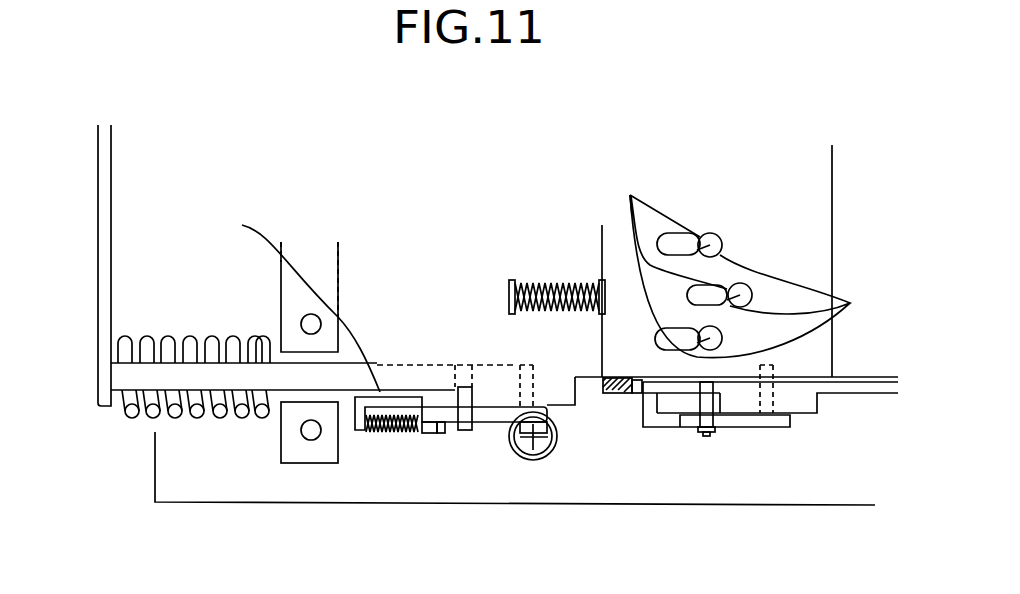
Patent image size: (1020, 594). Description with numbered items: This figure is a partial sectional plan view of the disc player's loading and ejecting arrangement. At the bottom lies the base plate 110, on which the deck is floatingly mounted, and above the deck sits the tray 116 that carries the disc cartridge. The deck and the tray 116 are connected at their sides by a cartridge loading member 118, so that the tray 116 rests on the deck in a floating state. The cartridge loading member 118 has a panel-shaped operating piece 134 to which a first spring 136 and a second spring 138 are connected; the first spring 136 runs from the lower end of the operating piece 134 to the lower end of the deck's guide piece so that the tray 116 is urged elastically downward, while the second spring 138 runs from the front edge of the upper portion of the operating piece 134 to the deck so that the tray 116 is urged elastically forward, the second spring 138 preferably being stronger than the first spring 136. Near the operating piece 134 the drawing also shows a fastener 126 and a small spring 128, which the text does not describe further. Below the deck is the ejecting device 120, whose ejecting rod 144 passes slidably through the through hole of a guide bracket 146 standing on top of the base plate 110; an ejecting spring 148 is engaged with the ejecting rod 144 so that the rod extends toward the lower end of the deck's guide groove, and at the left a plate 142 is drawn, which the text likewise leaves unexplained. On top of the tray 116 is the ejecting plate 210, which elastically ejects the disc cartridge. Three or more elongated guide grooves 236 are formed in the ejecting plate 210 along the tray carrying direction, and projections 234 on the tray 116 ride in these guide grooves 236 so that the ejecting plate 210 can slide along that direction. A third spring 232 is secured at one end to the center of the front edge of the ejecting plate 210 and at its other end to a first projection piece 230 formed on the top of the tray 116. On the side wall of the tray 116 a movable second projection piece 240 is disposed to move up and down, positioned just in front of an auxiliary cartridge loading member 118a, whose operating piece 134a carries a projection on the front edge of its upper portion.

The base plate 110 is at (380, 485).
The tray 116 is at (367, 205).
The cartridge loading member 118 is at (497, 452).
The auxiliary cartridge loading member 118a is at (724, 458).
The ejecting device 120 is at (116, 417).
The screw 126 is at (458, 372).
The spring 128 is at (542, 453).
The operating piece 134 is at (493, 415).
The operating piece of auxiliary loading member 134a is at (763, 428).
The first spring 136 is at (548, 438).
The second spring 138 is at (395, 415).
The front plate 142 is at (100, 348).
The ejecting rod 144 is at (173, 380).
The guide bracket 146 is at (303, 455).
The ejecting spring 148 is at (217, 422).
The ejecting plate 210 is at (787, 238).
The first projection piece 230 is at (510, 282).
The third spring 232 is at (555, 280).
The projection 234 is at (622, 190).
The guide groove 236 is at (767, 276).
The movable second projection piece 240 is at (615, 395).